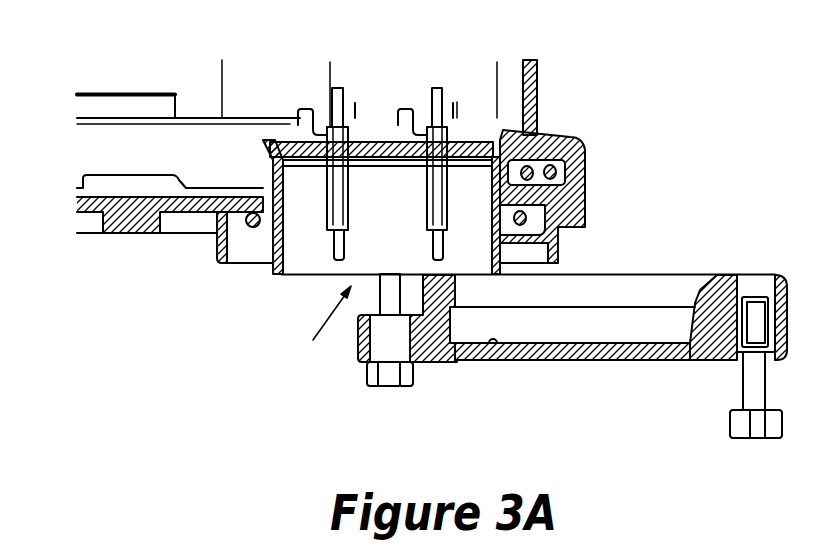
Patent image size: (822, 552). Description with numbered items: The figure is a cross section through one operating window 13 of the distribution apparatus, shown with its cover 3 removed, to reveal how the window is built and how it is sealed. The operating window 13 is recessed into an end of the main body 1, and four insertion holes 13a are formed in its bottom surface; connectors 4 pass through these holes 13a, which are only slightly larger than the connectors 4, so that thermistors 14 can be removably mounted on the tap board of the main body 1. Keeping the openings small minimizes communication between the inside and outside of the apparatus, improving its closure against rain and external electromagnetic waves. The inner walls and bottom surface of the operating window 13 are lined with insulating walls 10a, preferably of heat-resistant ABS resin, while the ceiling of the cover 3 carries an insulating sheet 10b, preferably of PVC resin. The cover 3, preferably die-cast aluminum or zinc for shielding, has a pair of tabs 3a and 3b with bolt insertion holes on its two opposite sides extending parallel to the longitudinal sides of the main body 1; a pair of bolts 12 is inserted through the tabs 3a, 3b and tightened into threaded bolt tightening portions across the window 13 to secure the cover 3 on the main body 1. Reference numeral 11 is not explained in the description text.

The main body 1 is at (563, 142).
The cover 3 is at (568, 358).
The tab 3a is at (377, 345).
The tab 3b is at (740, 362).
The connector 4 is at (378, 145).
The insulating wall 10a is at (560, 250).
The insulating sheet 10b is at (493, 345).
The cover 11 is at (252, 235).
The bolt 12 is at (393, 393).
The operating window 13 is at (427, 235).
The insertion hole 13a is at (333, 177).
The thermistor 14 is at (337, 242).